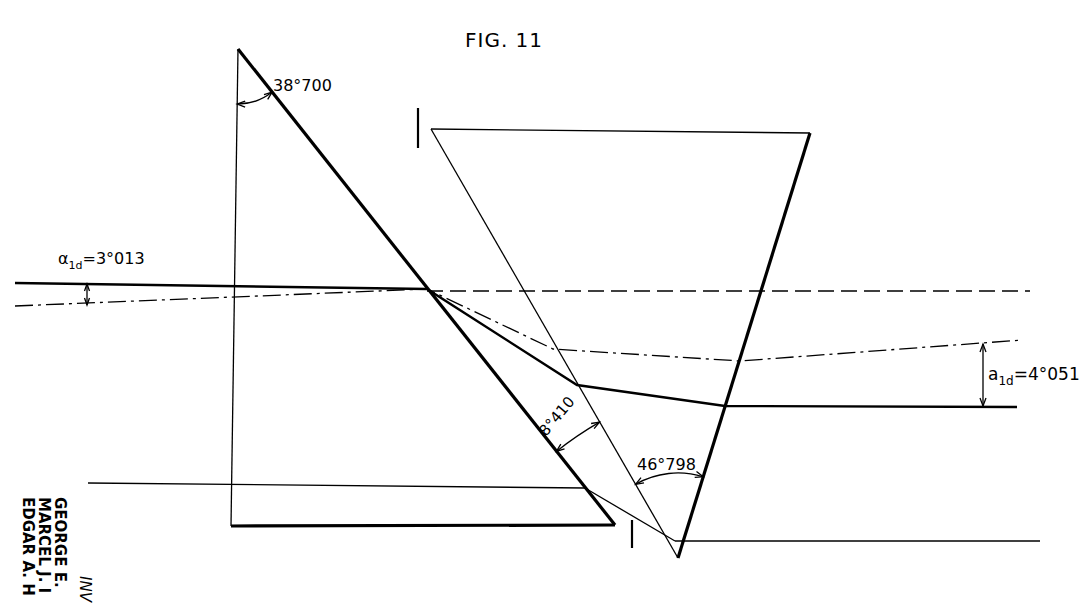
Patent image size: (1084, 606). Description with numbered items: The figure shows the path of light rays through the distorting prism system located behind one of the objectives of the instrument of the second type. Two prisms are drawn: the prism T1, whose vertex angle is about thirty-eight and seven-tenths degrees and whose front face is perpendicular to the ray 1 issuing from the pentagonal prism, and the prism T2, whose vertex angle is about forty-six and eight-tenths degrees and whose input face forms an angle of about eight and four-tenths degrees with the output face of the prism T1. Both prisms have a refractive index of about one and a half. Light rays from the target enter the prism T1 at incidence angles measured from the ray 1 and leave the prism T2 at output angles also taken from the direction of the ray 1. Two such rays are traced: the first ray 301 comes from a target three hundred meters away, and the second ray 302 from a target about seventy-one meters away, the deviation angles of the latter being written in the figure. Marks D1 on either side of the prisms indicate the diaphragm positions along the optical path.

The ray 1 is at (857, 290).
The first ray 301 is at (160, 284).
The second ray 302 is at (165, 303).
The prism T1 is at (235, 190).
The prism T2 is at (533, 148).
The diaphragm D1 is at (412, 128).